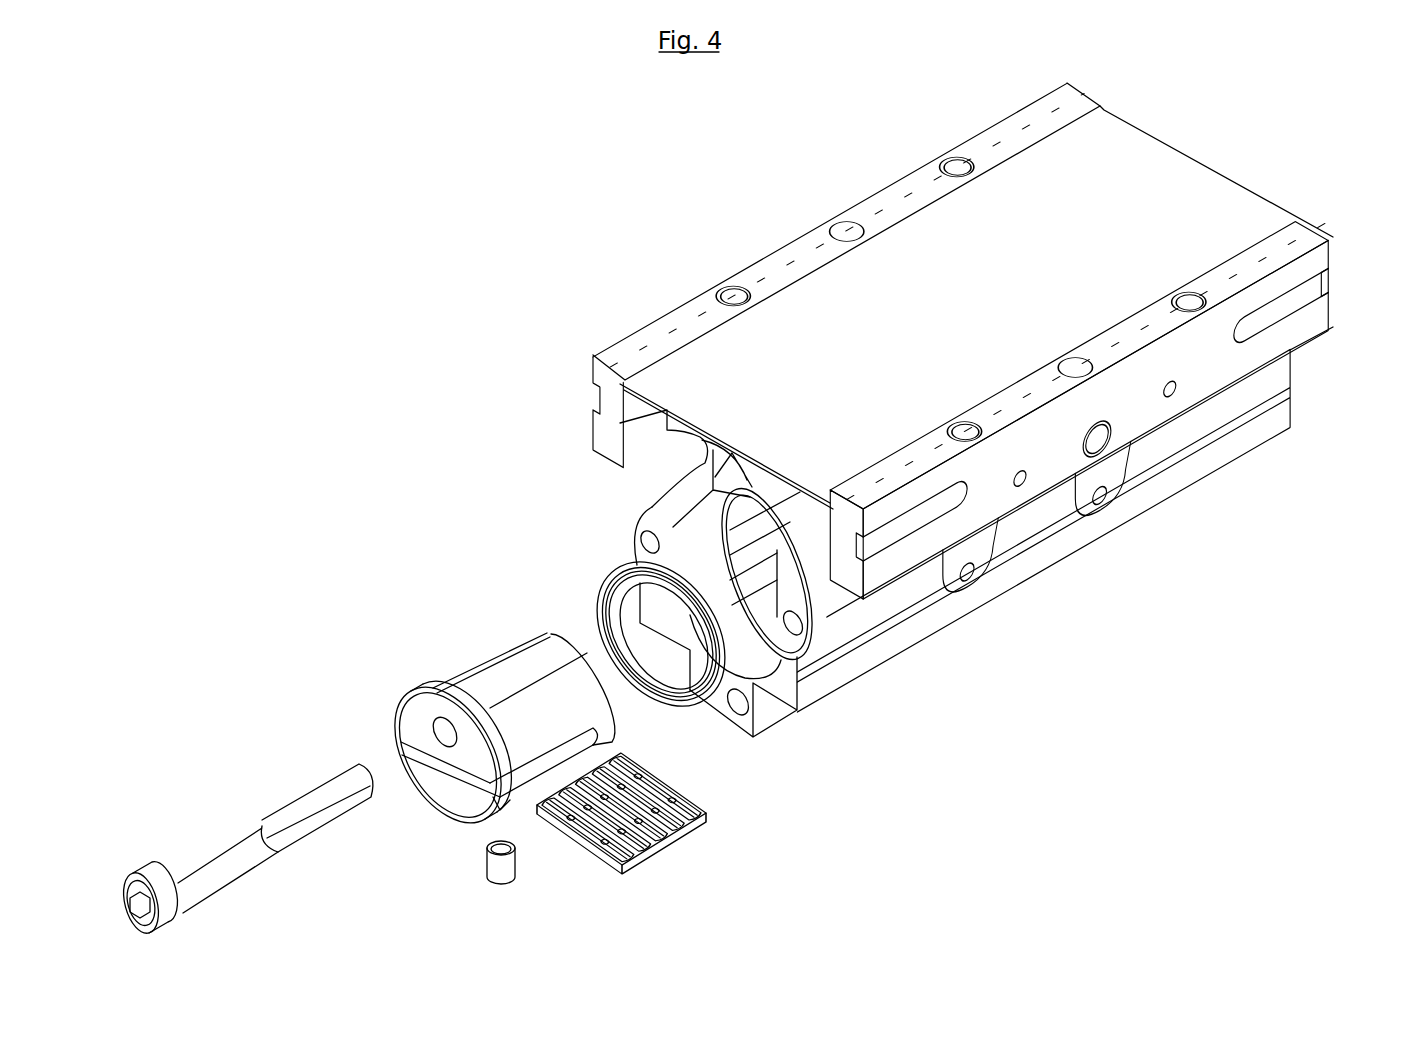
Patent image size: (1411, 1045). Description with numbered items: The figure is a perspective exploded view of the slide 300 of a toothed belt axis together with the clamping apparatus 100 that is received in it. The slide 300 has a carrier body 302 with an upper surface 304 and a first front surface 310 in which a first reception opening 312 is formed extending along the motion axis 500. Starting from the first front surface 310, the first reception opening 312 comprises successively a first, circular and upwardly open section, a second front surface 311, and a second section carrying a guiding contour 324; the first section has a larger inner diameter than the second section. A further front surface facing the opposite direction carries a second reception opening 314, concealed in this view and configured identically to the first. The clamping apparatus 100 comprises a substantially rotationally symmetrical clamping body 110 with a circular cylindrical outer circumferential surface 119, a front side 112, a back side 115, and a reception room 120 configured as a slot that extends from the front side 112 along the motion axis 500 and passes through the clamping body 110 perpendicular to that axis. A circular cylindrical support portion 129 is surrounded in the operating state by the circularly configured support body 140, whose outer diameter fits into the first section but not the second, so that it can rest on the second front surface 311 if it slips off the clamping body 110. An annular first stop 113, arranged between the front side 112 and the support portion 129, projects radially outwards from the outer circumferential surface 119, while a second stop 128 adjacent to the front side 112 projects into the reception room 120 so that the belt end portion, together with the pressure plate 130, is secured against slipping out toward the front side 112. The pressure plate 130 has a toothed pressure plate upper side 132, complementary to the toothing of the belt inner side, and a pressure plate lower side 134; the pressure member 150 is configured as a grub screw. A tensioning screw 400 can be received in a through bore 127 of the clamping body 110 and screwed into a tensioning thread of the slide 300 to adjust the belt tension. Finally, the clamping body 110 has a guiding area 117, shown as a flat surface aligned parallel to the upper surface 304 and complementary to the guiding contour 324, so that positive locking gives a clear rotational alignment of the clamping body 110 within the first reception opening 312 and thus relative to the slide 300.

The clamping apparatus 100 is at (535, 728).
The clamping body 110 is at (435, 742).
The front side 112 is at (415, 730).
The first stop 113 is at (430, 715).
The back side 115 is at (574, 627).
The guiding area 117 is at (513, 662).
The outer circumferential surface 119 is at (497, 804).
The reception room 120 is at (556, 758).
The through bore 127 is at (442, 735).
The second stop 128 is at (503, 805).
The support portion 129 is at (442, 690).
The pressure plate 130 is at (672, 852).
The pressure plate upper side 132 is at (625, 840).
The pressure plate lower side 134 is at (662, 848).
The support body 140 is at (607, 566).
The pressure member 150 is at (498, 872).
The slide 300 is at (1112, 587).
The carrier body 302 is at (727, 282).
The upper surface 304 is at (927, 243).
The first front surface 310 is at (775, 712).
The second front surface 311 is at (800, 690).
The first reception opening 312 is at (689, 524).
The second reception opening 314 is at (1306, 393).
The guiding contour 324 is at (782, 560).
The tensioning screw 400 is at (165, 823).
The motion axis 500 is at (1385, 200).